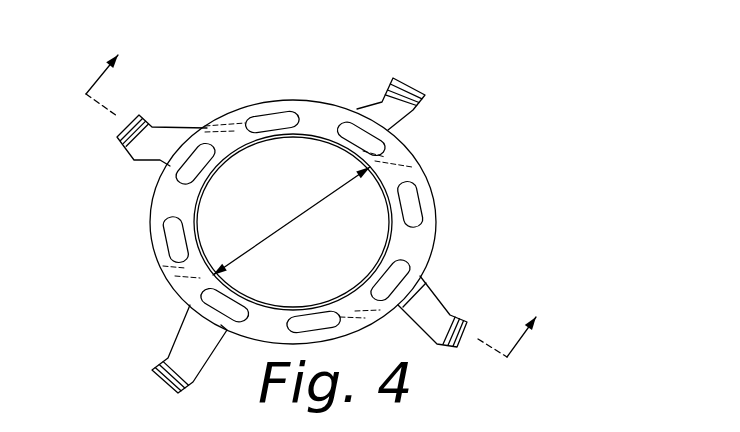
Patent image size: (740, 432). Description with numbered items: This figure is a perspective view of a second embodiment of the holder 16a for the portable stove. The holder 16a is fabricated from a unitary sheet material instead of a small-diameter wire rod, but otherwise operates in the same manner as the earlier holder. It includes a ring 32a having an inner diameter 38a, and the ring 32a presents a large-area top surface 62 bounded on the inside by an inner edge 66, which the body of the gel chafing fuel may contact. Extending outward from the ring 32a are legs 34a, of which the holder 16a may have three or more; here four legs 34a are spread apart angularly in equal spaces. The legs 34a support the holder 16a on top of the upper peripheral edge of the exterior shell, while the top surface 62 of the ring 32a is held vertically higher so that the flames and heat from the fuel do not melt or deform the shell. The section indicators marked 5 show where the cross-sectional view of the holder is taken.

The holder 16a is at (72, 75).
The ring 32a is at (250, 92).
The legs 34a is at (148, 132).
The inner diameter 38a is at (290, 220).
The top surface 62 is at (418, 239).
The inner edge 66 is at (252, 143).
The section line 5- 5 is at (320, 193).